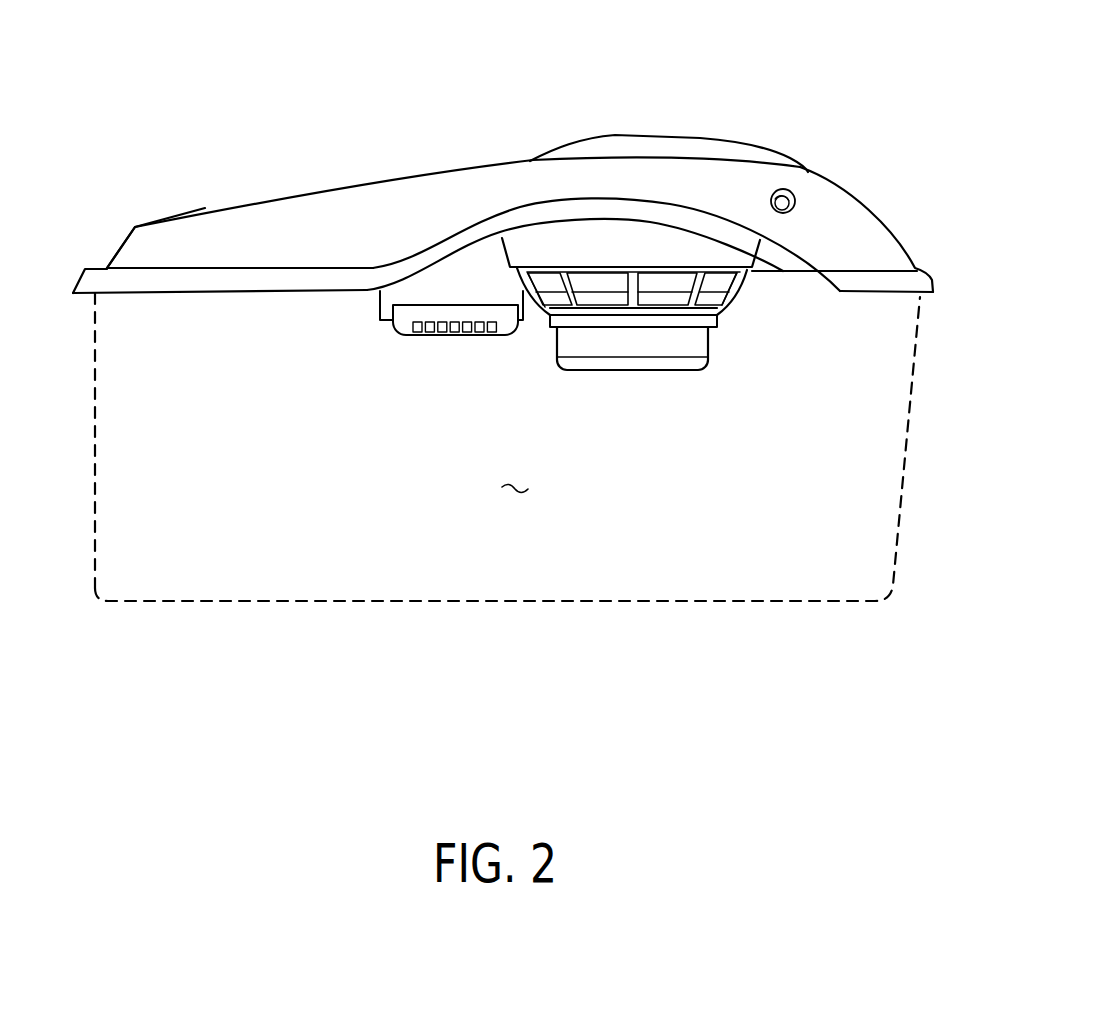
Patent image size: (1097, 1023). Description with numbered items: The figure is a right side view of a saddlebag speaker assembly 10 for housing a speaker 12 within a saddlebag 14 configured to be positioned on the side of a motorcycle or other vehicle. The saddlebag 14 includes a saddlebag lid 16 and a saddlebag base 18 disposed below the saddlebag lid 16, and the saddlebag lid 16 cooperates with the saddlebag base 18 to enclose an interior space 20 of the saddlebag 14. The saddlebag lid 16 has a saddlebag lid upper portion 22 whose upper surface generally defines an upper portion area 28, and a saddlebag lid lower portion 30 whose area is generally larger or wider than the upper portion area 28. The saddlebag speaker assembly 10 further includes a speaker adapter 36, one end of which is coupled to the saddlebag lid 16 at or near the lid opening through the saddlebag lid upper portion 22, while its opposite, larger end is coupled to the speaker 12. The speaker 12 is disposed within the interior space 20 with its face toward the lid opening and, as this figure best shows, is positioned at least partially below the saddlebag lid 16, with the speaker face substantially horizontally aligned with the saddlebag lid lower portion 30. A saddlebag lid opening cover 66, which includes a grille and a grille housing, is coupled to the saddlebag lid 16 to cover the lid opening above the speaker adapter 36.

The saddlebag speaker assembly 10 is at (805, 627).
The speaker 12 is at (688, 372).
The saddlebag 14 is at (907, 577).
The saddlebag lid 16 is at (872, 265).
The saddlebag base 18 is at (95, 528).
The interior space 20 is at (515, 490).
The saddlebag lid upper portion 22 is at (388, 147).
The upper portion area 28 is at (205, 208).
The saddlebag lid lower portion 30 is at (941, 283).
The speaker adapter 36 is at (678, 248).
The saddlebag lid opening cover 66 is at (743, 131).